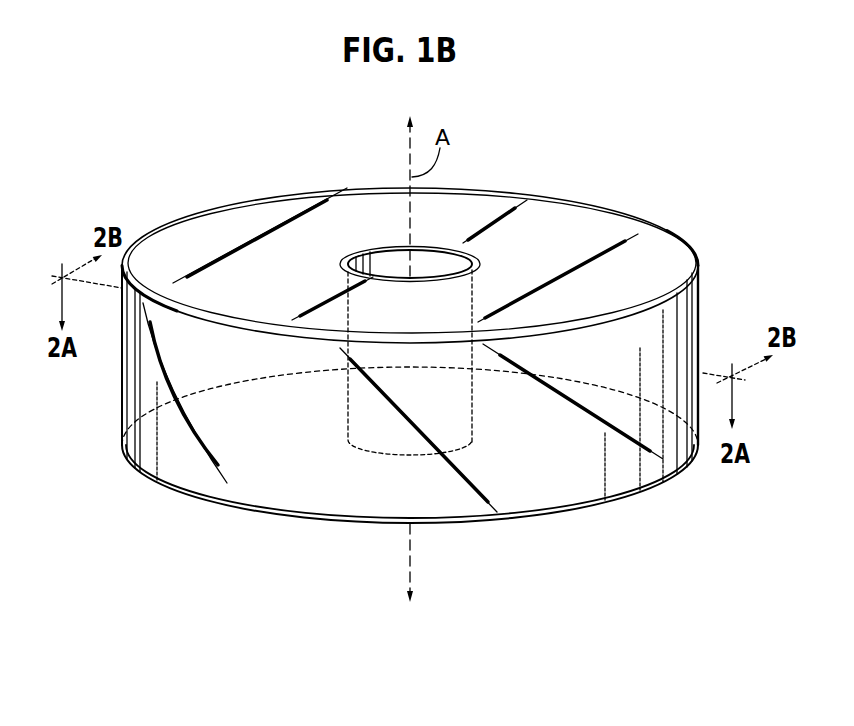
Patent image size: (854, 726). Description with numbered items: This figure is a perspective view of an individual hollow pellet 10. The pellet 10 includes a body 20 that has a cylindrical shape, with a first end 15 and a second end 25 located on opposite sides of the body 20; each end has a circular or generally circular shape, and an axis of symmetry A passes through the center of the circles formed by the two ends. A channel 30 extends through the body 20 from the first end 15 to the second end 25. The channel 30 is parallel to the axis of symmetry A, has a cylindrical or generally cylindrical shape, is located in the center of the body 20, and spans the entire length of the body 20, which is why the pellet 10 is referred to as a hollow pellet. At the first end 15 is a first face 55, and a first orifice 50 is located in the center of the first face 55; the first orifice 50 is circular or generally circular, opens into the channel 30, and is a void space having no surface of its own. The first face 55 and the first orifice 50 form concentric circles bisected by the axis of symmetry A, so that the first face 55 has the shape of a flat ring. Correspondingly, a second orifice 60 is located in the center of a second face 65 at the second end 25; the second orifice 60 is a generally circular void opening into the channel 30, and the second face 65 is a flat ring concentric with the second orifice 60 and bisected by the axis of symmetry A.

The pellet 10 is at (150, 203).
The first end 15 is at (676, 226).
The body 20 is at (537, 472).
The second end 25 is at (159, 494).
The channel 30 is at (404, 262).
The first orifice 50 is at (463, 240).
The first face 55 is at (248, 217).
The second orifice 60 is at (413, 462).
The second face 65 is at (398, 526).